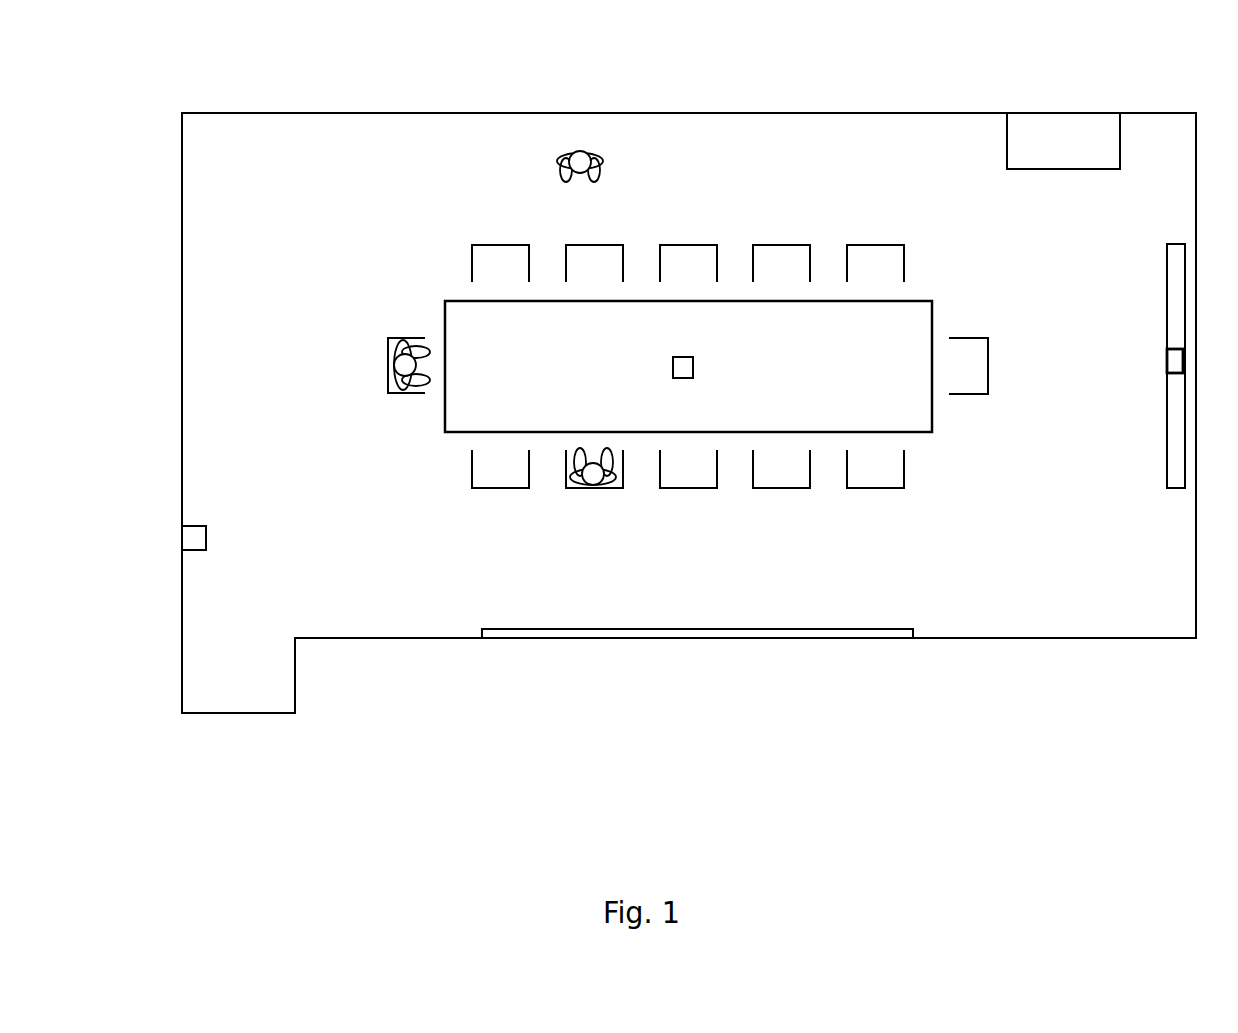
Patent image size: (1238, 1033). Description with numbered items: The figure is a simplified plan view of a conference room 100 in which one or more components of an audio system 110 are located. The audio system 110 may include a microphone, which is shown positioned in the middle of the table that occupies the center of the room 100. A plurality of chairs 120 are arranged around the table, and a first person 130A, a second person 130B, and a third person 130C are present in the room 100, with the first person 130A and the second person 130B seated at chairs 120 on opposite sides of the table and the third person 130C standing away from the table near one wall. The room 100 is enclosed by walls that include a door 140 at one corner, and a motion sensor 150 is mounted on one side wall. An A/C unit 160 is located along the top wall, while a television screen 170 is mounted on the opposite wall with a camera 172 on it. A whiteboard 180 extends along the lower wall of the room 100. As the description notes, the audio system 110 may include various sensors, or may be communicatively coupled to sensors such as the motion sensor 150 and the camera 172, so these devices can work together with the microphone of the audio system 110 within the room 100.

The room 100 is at (184, 58).
The audio system 110 is at (681, 366).
The chairs 120 is at (472, 255).
The first person 130A is at (409, 370).
The second person 130B is at (594, 486).
The third person 130C is at (577, 162).
The door 140 is at (211, 712).
The motion sensor 150 is at (193, 540).
The A/C unit 160 is at (1017, 152).
The television screen 170 is at (1176, 254).
The camera 172 is at (1176, 362).
The whiteboard 180 is at (529, 628).